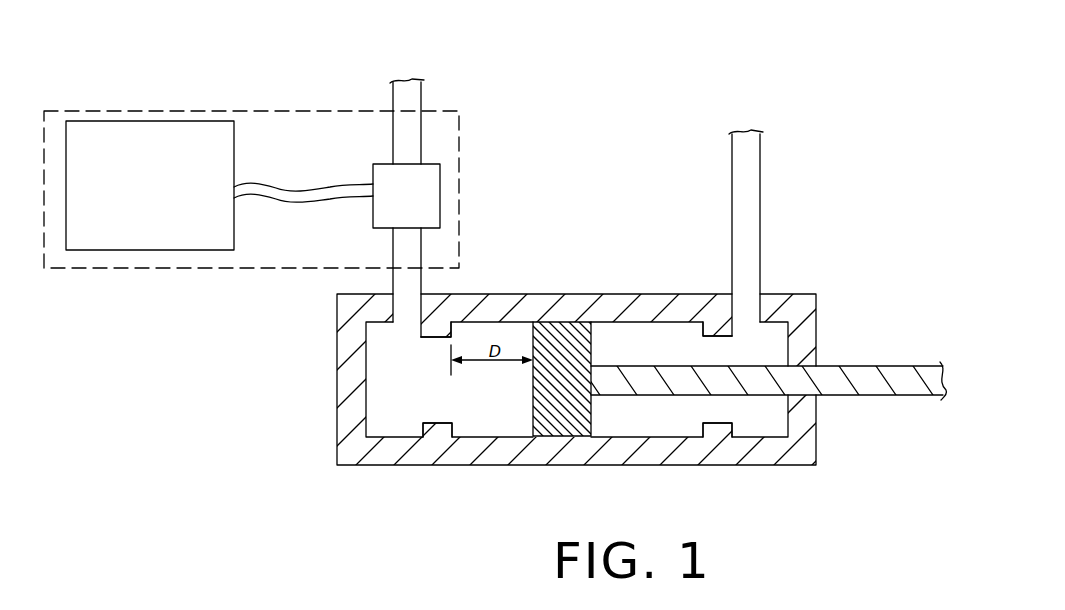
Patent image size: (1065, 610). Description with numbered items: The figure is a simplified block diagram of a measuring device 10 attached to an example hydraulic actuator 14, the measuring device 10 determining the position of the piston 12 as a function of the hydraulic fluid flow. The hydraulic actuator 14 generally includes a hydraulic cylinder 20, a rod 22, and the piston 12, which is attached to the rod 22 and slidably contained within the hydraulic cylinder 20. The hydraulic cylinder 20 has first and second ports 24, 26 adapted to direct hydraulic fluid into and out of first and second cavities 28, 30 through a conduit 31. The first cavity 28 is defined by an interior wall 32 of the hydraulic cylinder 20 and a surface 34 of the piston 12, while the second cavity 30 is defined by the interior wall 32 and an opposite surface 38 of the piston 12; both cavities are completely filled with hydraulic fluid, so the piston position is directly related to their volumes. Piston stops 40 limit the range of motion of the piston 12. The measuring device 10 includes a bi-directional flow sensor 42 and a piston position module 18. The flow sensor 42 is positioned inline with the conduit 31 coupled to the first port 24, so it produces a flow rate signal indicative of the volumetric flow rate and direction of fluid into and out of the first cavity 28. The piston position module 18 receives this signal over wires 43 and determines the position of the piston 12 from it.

The measuring device 10 is at (188, 86).
The piston 12 is at (570, 333).
The hydraulic actuator 14 is at (574, 400).
The piston position module 18 is at (139, 251).
The hydraulic cylinder 20 is at (386, 466).
The rod 22 is at (830, 367).
The first port 24 is at (402, 306).
The second port 26 is at (745, 305).
The first cavity 28 is at (373, 386).
The second cavity 30 is at (674, 423).
The conduit 31 is at (422, 92).
The interior wall 32 is at (484, 437).
The surface 34 is at (533, 427).
The surface 38 is at (594, 413).
The piston stops 40 is at (458, 330).
The bi-directional flow sensor 42 is at (430, 184).
The wires 43 is at (294, 186).